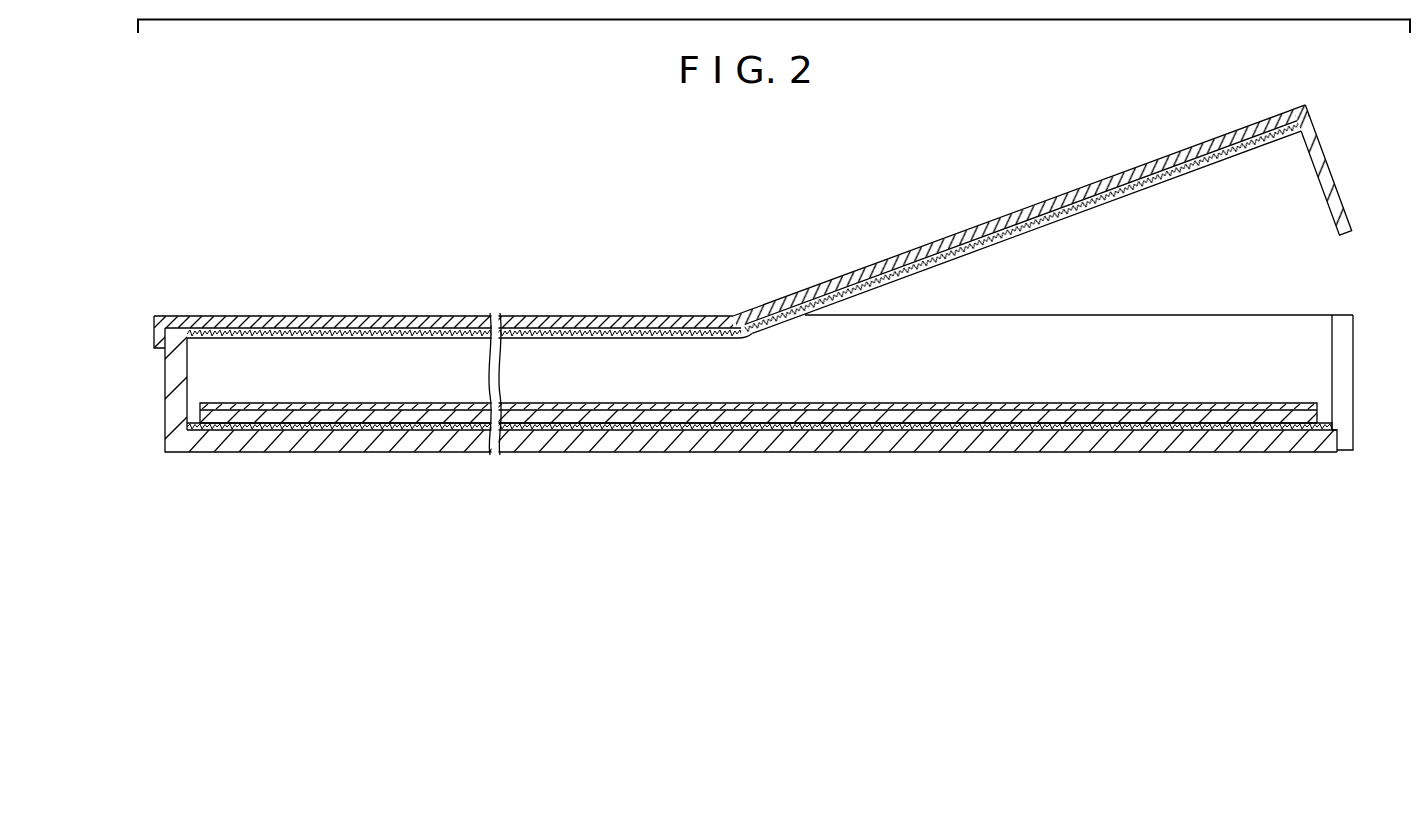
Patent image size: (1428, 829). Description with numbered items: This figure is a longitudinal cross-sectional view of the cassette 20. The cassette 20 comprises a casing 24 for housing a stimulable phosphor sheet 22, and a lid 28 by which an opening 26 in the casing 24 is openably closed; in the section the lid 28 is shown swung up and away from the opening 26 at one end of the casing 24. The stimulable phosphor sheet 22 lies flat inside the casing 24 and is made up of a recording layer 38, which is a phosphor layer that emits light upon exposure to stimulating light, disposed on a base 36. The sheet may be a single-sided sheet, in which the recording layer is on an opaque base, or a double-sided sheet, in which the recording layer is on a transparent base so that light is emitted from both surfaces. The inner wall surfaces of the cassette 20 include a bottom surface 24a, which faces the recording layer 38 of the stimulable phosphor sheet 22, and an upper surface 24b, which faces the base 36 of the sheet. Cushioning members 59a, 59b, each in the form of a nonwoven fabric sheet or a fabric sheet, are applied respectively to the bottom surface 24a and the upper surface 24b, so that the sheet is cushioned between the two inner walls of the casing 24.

The cassette 20 is at (898, 136).
The stimulable phosphor sheet 22 is at (1152, 398).
The casing 24 is at (760, 452).
The bottom surface 24a is at (840, 432).
The upper surface 24b is at (912, 283).
The opening 26 is at (1336, 273).
The lid 28 is at (1169, 156).
The base 36 is at (897, 403).
The recording layer 38 is at (942, 424).
The cushioning member 59a is at (1050, 433).
The cushioning member 59b is at (1013, 240).